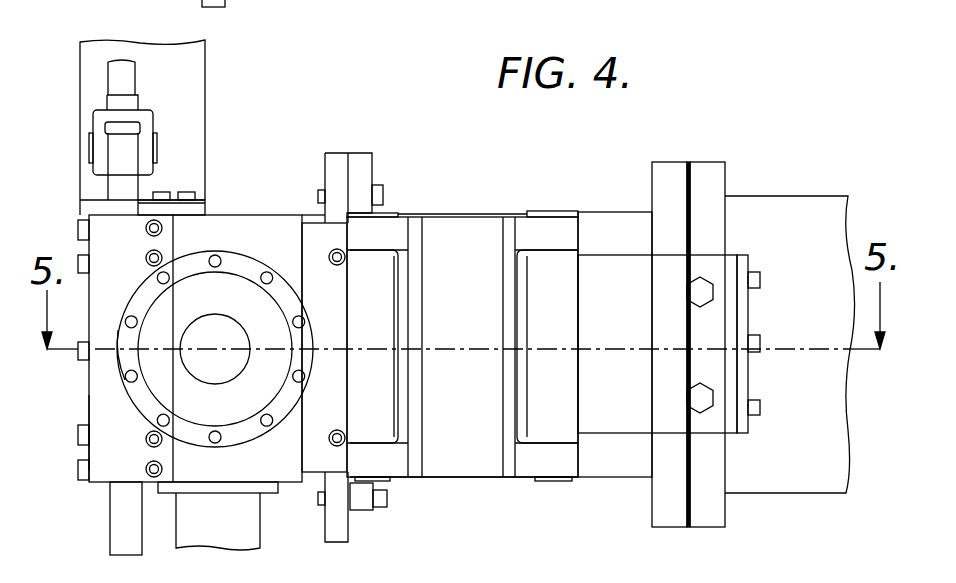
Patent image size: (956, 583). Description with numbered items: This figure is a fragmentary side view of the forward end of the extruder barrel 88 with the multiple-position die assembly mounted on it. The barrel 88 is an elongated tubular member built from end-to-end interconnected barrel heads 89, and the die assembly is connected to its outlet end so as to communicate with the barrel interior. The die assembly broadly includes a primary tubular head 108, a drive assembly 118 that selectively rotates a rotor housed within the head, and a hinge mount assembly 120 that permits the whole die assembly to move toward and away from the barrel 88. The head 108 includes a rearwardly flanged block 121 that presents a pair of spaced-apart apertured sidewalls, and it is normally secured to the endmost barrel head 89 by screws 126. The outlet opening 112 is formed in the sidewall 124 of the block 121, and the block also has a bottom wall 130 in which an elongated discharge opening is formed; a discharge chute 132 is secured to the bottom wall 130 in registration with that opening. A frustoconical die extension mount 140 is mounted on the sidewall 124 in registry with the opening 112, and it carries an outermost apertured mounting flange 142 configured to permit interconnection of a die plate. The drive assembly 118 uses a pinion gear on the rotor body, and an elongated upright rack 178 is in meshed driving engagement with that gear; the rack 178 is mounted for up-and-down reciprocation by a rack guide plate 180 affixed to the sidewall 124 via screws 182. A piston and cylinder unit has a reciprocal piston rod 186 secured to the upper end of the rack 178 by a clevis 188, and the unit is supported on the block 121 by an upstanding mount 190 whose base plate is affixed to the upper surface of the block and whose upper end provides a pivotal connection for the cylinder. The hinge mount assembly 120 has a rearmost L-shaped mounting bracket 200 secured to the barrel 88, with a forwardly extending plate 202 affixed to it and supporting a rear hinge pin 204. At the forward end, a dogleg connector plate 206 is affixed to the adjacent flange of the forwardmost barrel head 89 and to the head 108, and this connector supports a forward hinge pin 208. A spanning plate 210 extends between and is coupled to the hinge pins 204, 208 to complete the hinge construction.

The extruder barrel 88 is at (807, 183).
The barrel heads 89 is at (705, 172).
The primary tubular head 108 is at (255, 200).
The outlet opening 112 is at (210, 365).
The drive assembly 118 is at (73, 62).
The hinge mount assembly 120 is at (488, 188).
The rearwardly flanged block 121 is at (281, 212).
The sidewall 124 is at (236, 468).
The screws 126 is at (383, 190).
The bottom wall 130 is at (183, 488).
The discharge chute 132 is at (250, 516).
The frustoconical die extension mount 140 is at (260, 312).
The apertured mounting flange 142 is at (125, 362).
The rack 178 is at (120, 208).
The rack guide plate 180 is at (105, 425).
The screws 182 is at (163, 228).
The piston rod 186 is at (124, 72).
The clevis 188 is at (100, 118).
The upstanding mount 190 is at (200, 80).
The L-shaped mounting bracket 200 is at (745, 317).
The forwardly extending plate 202 is at (633, 423).
The rear hinge pin 204 is at (537, 373).
The dogleg connector plate 206 is at (332, 458).
The forward hinge pin 208 is at (387, 300).
The spanning plate 210 is at (453, 470).